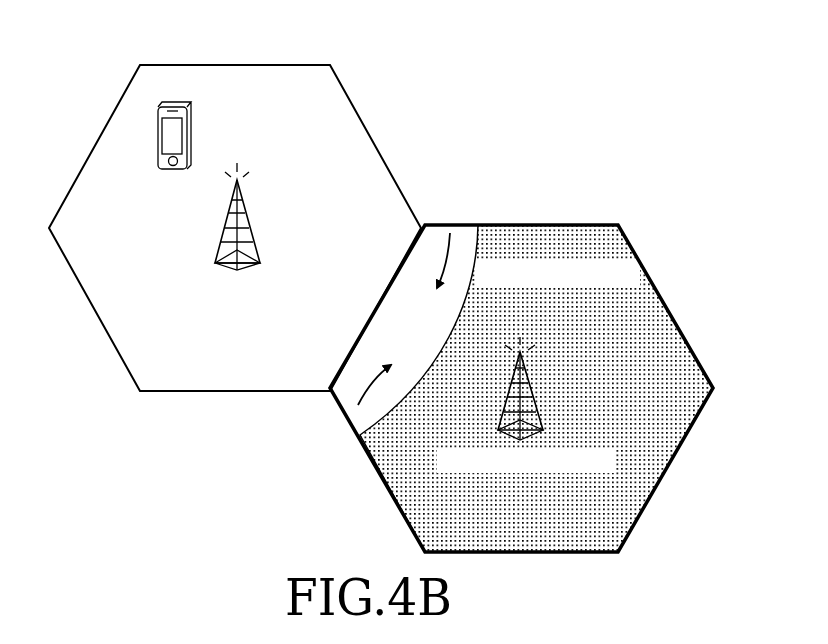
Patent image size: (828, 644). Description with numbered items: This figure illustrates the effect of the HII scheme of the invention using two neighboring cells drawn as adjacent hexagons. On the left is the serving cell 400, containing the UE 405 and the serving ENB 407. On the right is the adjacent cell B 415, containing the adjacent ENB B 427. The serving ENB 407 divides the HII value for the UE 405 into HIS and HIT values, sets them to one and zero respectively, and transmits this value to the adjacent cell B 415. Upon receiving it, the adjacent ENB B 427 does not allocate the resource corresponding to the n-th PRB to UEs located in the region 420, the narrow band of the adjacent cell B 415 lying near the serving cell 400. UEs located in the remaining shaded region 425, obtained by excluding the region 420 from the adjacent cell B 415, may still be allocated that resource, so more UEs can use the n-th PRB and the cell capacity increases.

The serving cell 400 is at (236, 65).
The UE S-1 405 is at (198, 145).
The serving ENB 407 is at (251, 221).
The adjacent cell B 415 is at (518, 225).
The region near the serving cell 420 is at (404, 319).
The region excluding the region near the serving cell 425 is at (640, 313).
The adjacent ENB B 427 is at (535, 393).